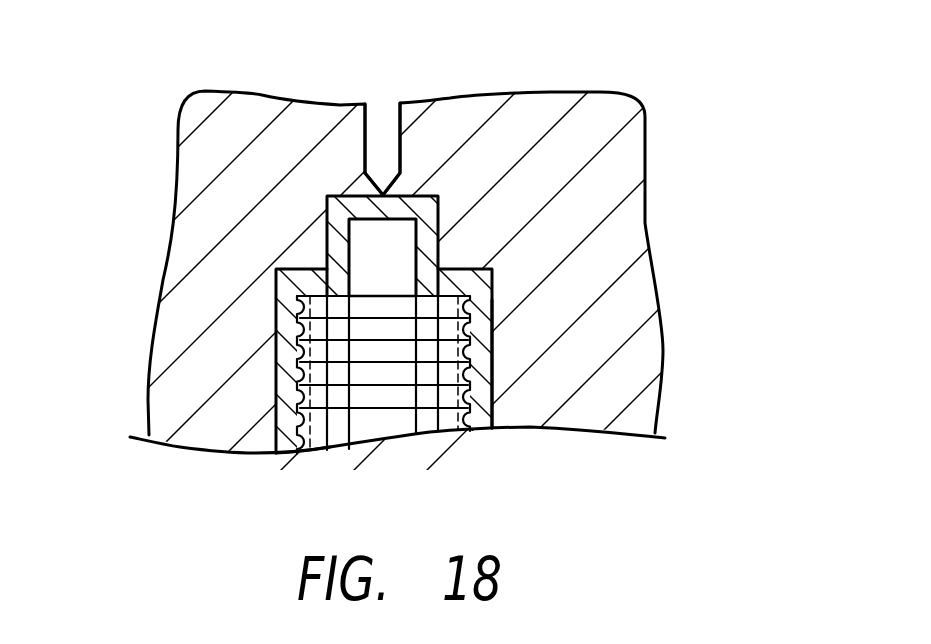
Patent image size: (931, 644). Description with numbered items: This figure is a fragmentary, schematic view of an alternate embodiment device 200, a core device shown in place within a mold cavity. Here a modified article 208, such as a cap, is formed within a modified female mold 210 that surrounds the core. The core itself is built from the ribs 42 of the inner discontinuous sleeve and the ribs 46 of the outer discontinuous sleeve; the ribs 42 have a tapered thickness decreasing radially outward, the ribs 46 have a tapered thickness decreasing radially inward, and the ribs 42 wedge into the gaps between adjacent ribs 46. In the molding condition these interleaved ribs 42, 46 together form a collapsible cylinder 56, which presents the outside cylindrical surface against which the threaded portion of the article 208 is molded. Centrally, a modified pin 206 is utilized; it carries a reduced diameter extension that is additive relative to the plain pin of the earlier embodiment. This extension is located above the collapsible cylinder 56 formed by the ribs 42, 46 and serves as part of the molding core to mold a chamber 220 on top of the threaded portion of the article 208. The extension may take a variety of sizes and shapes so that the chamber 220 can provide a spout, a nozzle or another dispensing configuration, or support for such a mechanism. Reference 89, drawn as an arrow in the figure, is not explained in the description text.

The alternate embodiment device 200 is at (460, 298).
The modified female mold 210 is at (605, 246).
The chamber 220 is at (327, 207).
The modified pin 206 is at (378, 247).
The insertion direction arrow 89 is at (382, 150).
The ribs 42 is at (318, 305).
The ribs 46 is at (395, 298).
The collapsible cylinder 56 is at (338, 443).
The modified article 208 is at (492, 380).